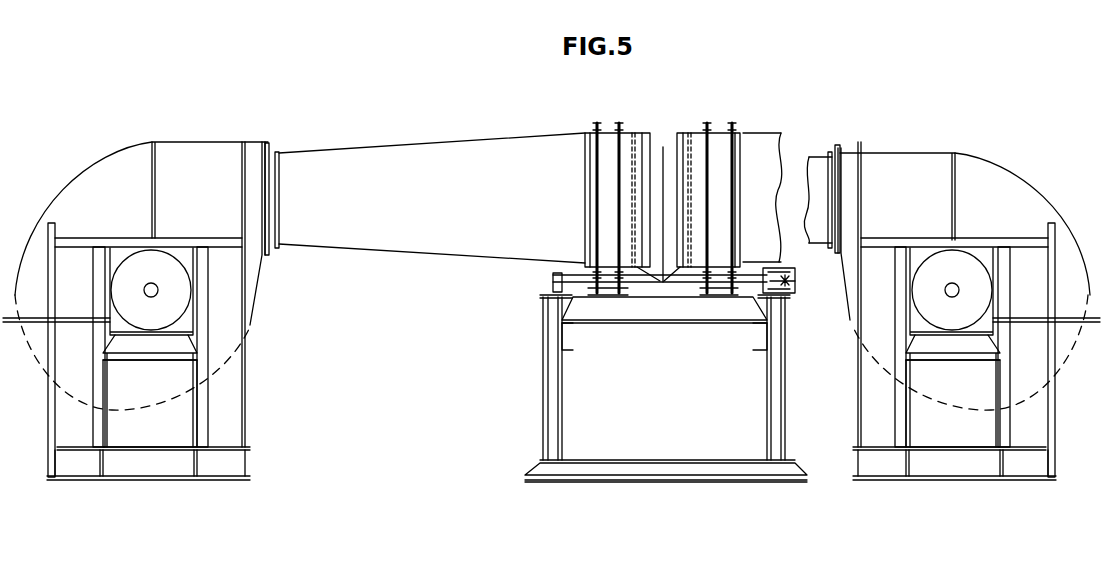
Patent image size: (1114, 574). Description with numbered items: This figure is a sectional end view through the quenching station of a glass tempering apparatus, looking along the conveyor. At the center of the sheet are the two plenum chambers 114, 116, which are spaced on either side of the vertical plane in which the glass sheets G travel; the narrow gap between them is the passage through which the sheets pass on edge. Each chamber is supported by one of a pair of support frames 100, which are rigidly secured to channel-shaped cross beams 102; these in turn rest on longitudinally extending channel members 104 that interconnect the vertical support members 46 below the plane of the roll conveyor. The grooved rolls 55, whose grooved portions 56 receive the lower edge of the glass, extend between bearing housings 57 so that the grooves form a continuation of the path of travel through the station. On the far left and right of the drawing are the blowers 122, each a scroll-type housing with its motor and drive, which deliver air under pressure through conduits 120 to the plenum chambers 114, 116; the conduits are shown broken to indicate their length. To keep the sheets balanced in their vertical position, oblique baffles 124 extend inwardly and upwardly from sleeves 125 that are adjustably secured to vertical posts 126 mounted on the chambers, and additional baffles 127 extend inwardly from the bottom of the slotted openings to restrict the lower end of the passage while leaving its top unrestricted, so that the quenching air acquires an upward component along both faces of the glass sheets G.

The vertical support members 46 is at (767, 383).
The rolls 55 is at (637, 284).
The grooved portions 56 is at (664, 282).
The bearing housings 57 is at (553, 283).
The support frames 100 is at (722, 128).
The cross beams 102 is at (690, 313).
The channel members 104 is at (565, 337).
The plenum chamber 114 is at (588, 147).
The plenum chamber 116 is at (740, 137).
The conduits 120 is at (337, 150).
The blowers 122 is at (76, 184).
The oblique baffles 124 is at (687, 198).
The sleeves 125 is at (635, 208).
The vertical posts 126 is at (633, 165).
The additional baffles 127 is at (667, 272).
The glass sheets G is at (663, 194).